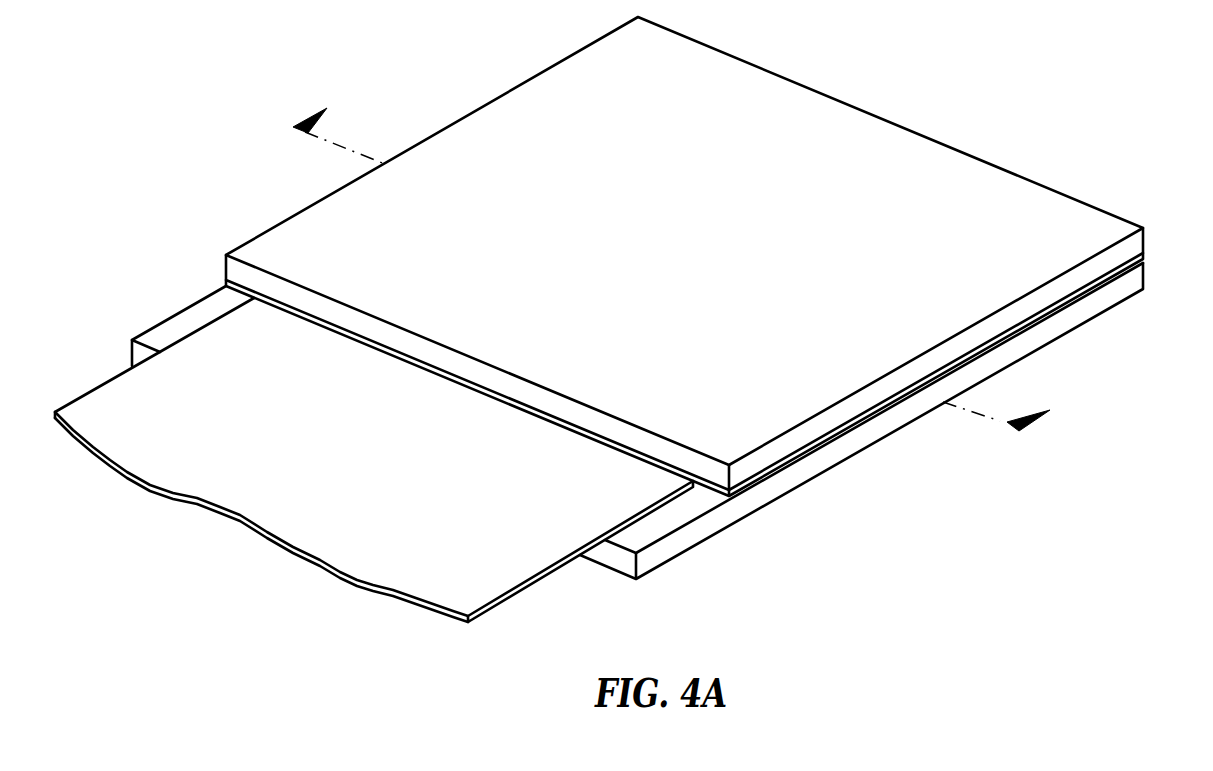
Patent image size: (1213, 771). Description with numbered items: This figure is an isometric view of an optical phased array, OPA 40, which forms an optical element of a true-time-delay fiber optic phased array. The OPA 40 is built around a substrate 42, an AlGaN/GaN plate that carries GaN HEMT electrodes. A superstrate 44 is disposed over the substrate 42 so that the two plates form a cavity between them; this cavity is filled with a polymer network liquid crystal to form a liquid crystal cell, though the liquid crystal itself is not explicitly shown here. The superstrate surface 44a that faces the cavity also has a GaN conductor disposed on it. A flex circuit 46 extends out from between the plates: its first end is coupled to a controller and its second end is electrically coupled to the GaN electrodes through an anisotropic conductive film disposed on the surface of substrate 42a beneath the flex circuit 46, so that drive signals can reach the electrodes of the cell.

The OPA 40 is at (977, 105).
The substrate 42 is at (1135, 275).
The surface of substrate 42a is at (165, 332).
The superstrate 44 is at (1135, 242).
The superstrate surface 44a is at (227, 282).
The flex circuit 46 is at (386, 531).